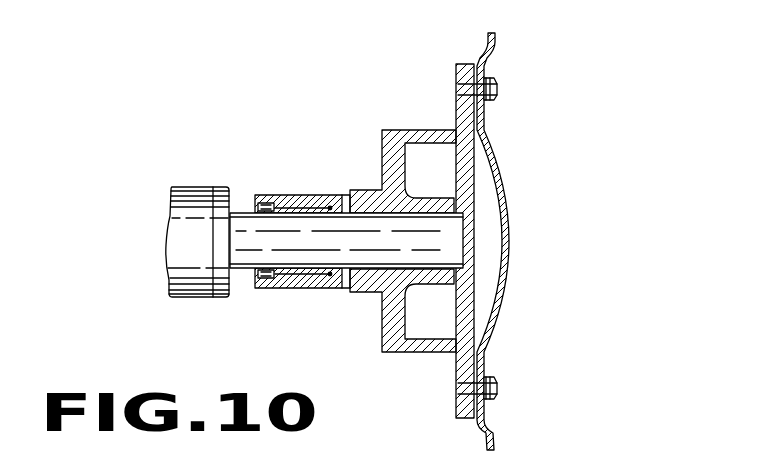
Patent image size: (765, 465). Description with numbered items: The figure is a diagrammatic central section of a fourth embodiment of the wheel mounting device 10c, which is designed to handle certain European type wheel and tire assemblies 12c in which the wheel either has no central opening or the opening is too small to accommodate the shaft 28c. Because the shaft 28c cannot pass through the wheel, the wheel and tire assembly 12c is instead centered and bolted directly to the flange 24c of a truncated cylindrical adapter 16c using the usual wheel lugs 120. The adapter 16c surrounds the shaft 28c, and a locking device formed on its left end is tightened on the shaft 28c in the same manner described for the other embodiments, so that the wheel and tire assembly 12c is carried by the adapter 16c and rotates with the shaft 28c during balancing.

The wheel mounting device 10c is at (298, 126).
The wheel and tire assembly 12c is at (491, 38).
The flange 24c is at (455, 70).
The wheel lugs 120 is at (498, 89).
The truncated cylindrical adapter 16c is at (380, 148).
The shaft 28c is at (457, 241).